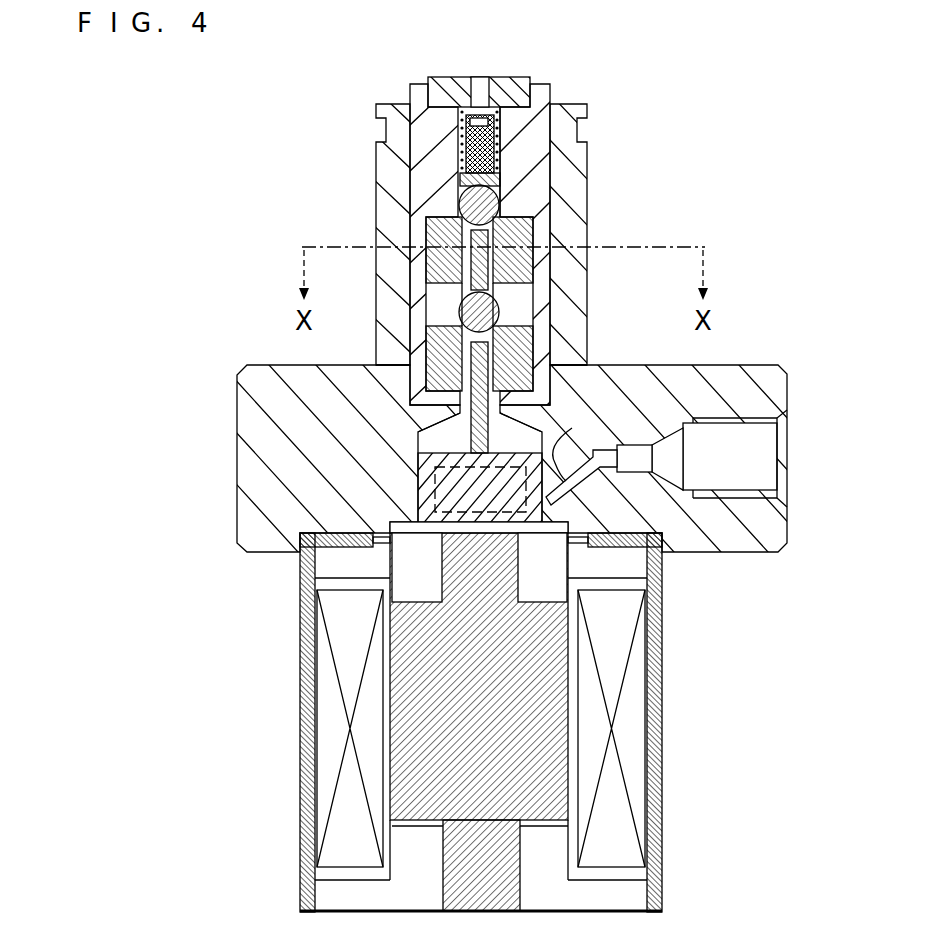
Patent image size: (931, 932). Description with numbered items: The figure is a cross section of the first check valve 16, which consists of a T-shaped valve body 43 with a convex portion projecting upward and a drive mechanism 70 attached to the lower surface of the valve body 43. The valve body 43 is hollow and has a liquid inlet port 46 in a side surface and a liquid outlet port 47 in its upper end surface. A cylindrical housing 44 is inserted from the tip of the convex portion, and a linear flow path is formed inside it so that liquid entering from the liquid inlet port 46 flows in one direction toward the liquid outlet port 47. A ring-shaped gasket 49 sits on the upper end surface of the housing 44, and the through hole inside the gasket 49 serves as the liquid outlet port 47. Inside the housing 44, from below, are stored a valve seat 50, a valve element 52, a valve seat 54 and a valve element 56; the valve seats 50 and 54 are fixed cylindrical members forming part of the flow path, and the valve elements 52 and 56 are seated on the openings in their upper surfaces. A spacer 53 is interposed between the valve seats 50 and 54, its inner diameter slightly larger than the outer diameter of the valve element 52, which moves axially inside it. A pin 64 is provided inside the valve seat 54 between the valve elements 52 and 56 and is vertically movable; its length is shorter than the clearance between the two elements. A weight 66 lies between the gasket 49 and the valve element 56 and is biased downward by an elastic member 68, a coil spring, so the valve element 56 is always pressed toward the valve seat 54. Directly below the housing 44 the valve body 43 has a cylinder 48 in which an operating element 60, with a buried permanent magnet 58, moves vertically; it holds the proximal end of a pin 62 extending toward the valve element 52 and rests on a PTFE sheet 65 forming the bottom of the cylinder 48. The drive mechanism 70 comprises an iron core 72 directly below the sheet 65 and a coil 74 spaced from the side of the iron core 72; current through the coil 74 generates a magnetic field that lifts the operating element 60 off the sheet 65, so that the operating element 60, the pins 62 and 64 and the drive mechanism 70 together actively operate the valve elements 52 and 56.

The first check valve 16 is at (735, 183).
The valve body 43 is at (404, 138).
The housing 44 is at (432, 178).
The liquid inlet port 46 is at (553, 452).
The liquid outlet port 47 is at (478, 100).
The cylinder 48 is at (510, 437).
The gasket 49 is at (520, 78).
The valve seat 50 is at (517, 352).
The valve element 52 is at (493, 309).
The spacer 53 is at (442, 300).
The valve seat 54 is at (517, 231).
The valve element 56 is at (492, 203).
The permanent magnet 58 is at (445, 487).
The operating element 60 is at (440, 470).
The pin 62 is at (425, 360).
The pin 64 is at (440, 230).
The sheet 65 is at (470, 526).
The weight 66 is at (540, 150).
The elastic member 68 is at (512, 130).
The drive mechanism 70 is at (660, 838).
The iron core 72 is at (535, 737).
The coil 74 is at (632, 767).